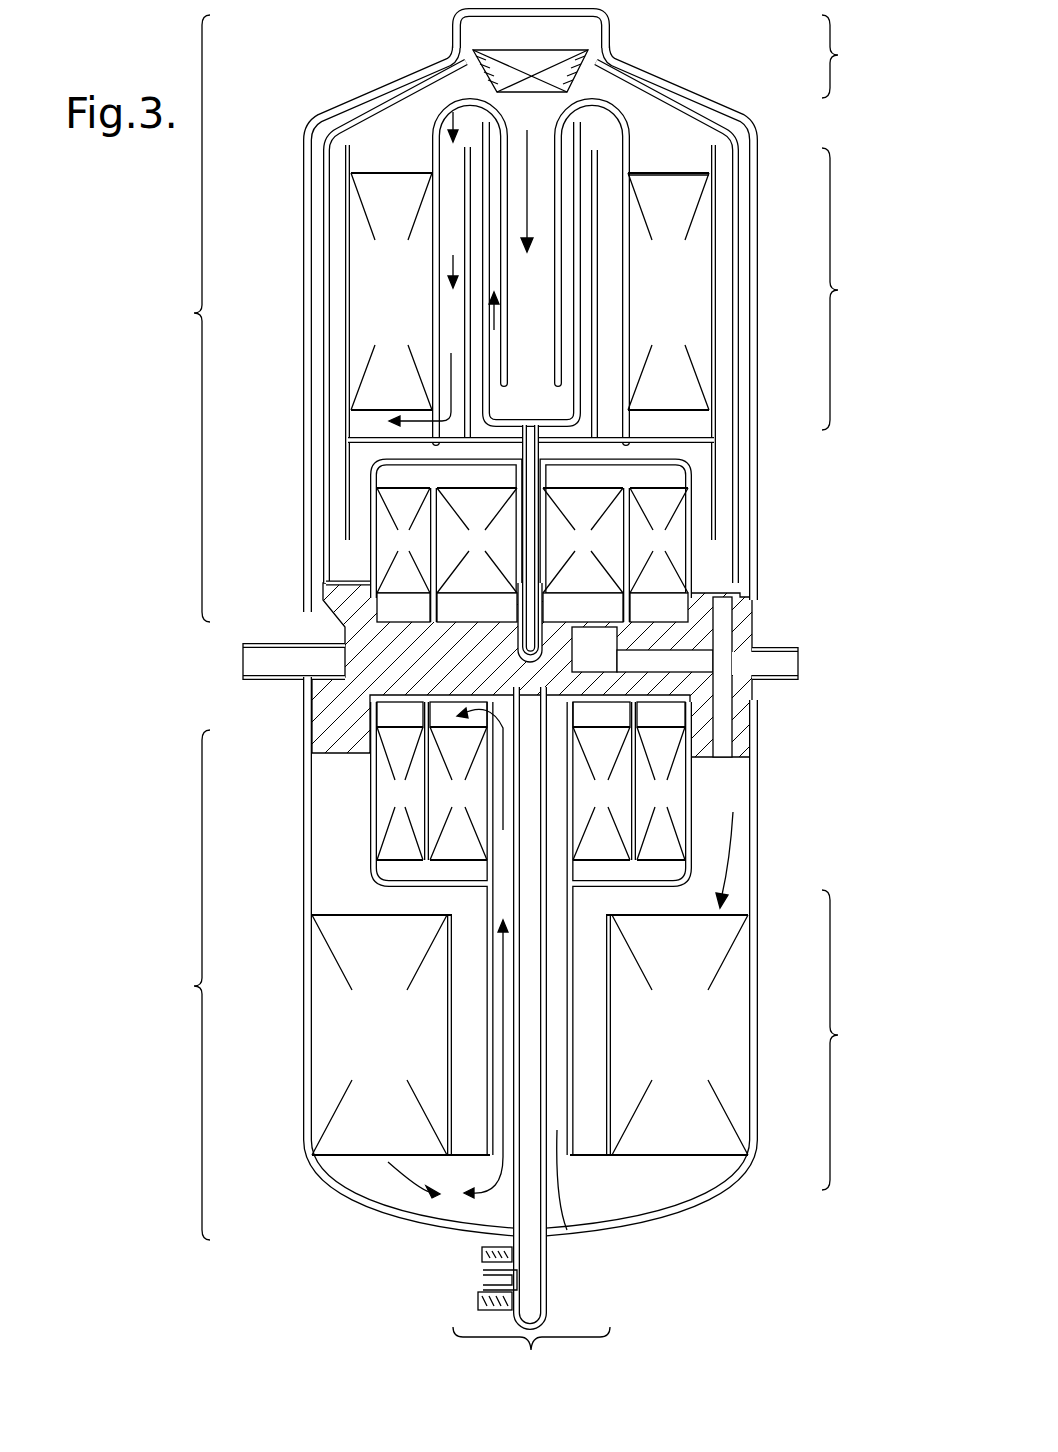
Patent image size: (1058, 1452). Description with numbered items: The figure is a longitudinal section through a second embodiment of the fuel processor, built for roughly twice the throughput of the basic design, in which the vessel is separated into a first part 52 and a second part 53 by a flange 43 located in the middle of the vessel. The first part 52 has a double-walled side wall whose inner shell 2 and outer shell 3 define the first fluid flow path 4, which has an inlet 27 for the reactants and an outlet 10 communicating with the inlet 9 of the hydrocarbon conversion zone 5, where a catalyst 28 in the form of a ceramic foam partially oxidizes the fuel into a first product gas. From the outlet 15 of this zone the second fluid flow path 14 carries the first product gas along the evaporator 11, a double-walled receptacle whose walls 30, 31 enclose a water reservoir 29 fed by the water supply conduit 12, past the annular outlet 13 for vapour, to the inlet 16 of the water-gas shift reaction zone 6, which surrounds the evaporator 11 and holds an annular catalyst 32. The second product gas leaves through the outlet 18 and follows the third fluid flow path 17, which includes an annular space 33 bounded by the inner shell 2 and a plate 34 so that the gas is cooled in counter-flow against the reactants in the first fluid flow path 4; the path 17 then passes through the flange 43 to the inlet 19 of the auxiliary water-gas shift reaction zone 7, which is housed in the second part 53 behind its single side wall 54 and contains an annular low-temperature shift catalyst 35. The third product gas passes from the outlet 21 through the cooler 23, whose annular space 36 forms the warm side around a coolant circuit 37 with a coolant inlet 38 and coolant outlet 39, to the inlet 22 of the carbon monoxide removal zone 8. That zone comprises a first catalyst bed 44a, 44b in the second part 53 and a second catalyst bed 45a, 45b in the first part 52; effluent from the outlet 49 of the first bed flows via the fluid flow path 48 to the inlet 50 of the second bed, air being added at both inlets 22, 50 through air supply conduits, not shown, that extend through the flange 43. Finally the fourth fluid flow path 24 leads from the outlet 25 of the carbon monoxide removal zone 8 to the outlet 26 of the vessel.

The inner shell 2 is at (499, 313).
The outer shell 3 is at (318, 118).
The first fluid flow path 4 is at (320, 143).
The hydrocarbon conversion zone 5 is at (842, 56).
The water-gas shift reaction zone 6 is at (842, 289).
The auxiliary water-gas shift reaction zone 7 is at (842, 1040).
The carbon monoxide removal zone 8 is at (822, 760).
The inlet of the hydrocarbon conversion zone 9 is at (530, 56).
The outlet of the first fluid flow path 10 is at (478, 34).
The evaporator 11 is at (563, 143).
The water supply conduit 12 is at (518, 628).
The outlet for vapour 13 is at (585, 147).
The second fluid flow path 14 is at (385, 445).
The outlet of the hydrocarbon conversion zone 15 is at (496, 212).
The inlet of the water-gas shift reaction zone 16 is at (668, 426).
The third fluid flow path 17 is at (735, 852).
The outlet of the water-gas shift reaction zone 18 is at (668, 162).
The inlet of the auxiliary water-gas shift reaction zone 19 is at (530, 902).
The outlet of the auxiliary water-gas shift reaction zone 21 is at (530, 1170).
The inlet of the carbon monoxide removal zone 22 is at (601, 715).
The cooler 23 is at (545, 1345).
The fourth fluid flow path 24 is at (650, 658).
The outlet of the carbon monoxide removal zone 25 is at (530, 609).
The outlet of the vessel 26 is at (787, 645).
The inlet of the first fluid flow path 27 is at (262, 658).
The catalyst 28 is at (552, 70).
The water reservoir 29 is at (531, 410).
The wall of the evaporator 30 is at (597, 270).
The wall of the evaporator 31 is at (578, 237).
The catalyst 32 is at (415, 293).
The annular space 33 is at (330, 425).
The plate 34 is at (342, 392).
The catalyst 35 is at (398, 1048).
The annular space 36 is at (553, 1138).
The coolant circuit 37 is at (530, 1078).
The inlet for coolant 38 is at (480, 1255).
The outlet for coolant 39 is at (478, 1300).
The flange 43 is at (478, 648).
The first part of the first catalyst bed 44a is at (478, 803).
The second part of the first catalyst bed 44b is at (387, 810).
The first part of the second catalyst bed 45a is at (420, 565).
The second part of the second catalyst bed 45b is at (492, 565).
The fluid flow path 48 is at (590, 663).
The outlet of the first catalyst bed 49 is at (531, 715).
The inlet of the second catalyst bed 50 is at (532, 609).
The first part of the vessel 52 is at (176, 318).
The second part of the vessel 53 is at (176, 985).
The single side wall 54 is at (303, 1030).